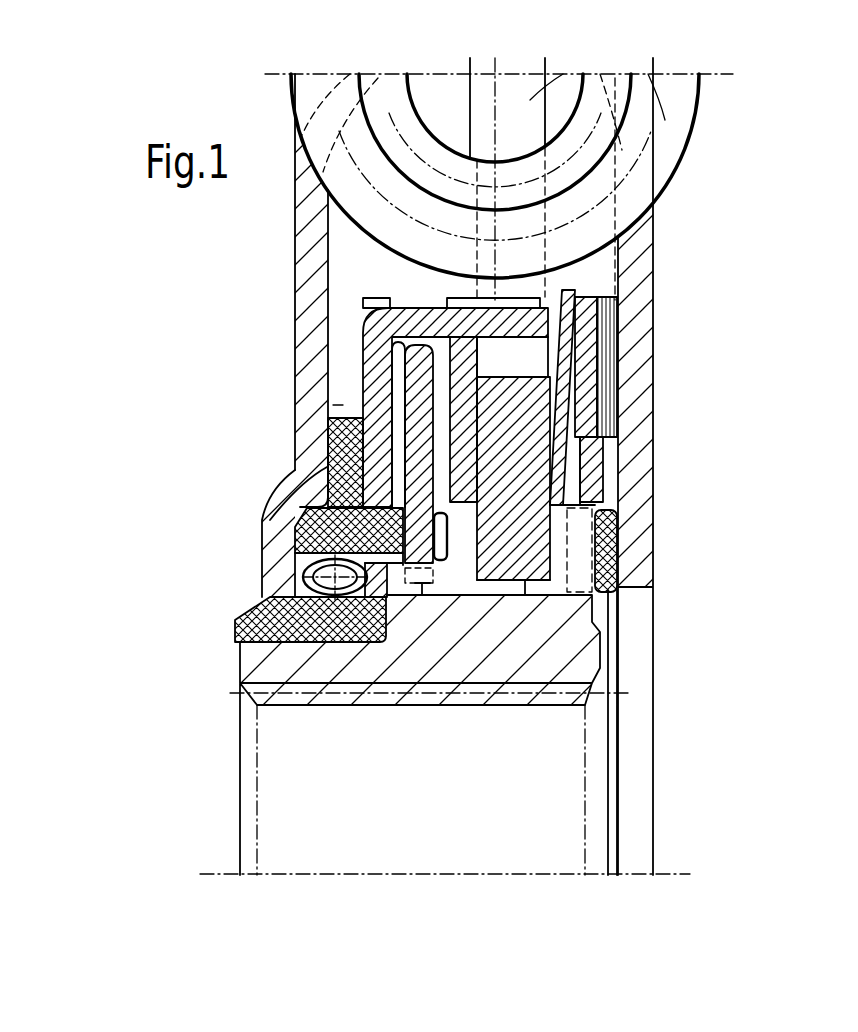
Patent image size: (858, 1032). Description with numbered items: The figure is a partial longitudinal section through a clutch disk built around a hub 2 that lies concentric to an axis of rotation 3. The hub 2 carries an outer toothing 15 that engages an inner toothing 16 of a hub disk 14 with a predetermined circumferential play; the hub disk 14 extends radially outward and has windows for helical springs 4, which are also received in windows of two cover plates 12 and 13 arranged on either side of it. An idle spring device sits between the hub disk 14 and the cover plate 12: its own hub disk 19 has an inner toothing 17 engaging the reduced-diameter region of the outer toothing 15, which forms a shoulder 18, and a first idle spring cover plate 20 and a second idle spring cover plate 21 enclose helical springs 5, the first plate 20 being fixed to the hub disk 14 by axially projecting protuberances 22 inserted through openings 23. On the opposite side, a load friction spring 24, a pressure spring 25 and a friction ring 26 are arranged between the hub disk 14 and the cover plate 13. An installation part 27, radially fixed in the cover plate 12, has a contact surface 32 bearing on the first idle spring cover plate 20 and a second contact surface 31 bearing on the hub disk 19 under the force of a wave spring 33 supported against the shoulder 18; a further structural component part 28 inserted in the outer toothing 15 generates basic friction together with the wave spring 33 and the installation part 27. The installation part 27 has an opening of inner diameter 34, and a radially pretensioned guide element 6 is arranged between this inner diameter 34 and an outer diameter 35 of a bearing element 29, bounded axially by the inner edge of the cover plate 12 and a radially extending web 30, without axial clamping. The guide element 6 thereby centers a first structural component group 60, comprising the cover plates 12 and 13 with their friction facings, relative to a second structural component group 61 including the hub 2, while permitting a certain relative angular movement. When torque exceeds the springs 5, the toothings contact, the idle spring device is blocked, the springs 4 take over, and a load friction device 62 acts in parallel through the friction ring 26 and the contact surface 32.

The hub 2 is at (450, 668).
The axis of rotation 3 is at (438, 877).
The helical springs 4 is at (683, 100).
The helical springs 5 is at (370, 352).
The guide element 6 is at (310, 572).
The cover plate 12 is at (312, 224).
The cover plate 13 is at (640, 258).
The hub disk 14 is at (560, 73).
The outer toothing 15 is at (440, 605).
The inner toothing 16 is at (525, 605).
The inner toothing 17 is at (390, 630).
The shoulder 18 is at (450, 537).
The hub disk 19 is at (427, 397).
The first idle spring cover plate 20 is at (400, 342).
The second idle spring cover plate 21 is at (480, 427).
The protuberances 22 is at (417, 307).
The openings 23 is at (566, 343).
The load friction spring 24 is at (600, 390).
The pressure spring 25 is at (585, 362).
The friction ring 26 is at (597, 338).
The installation part 27 is at (432, 548).
The structural component part 28 is at (615, 545).
The bearing element 29 is at (242, 617).
The web 30 is at (350, 636).
The contact surface 31 is at (470, 605).
The contact surface 32 is at (350, 432).
The wave spring 33 is at (365, 505).
The inner diameter 34 is at (350, 660).
The outer diameter 35 is at (365, 600).
The first structural component group 60 is at (660, 223).
The second structural component group 61 is at (590, 655).
The load friction device 62 is at (622, 312).